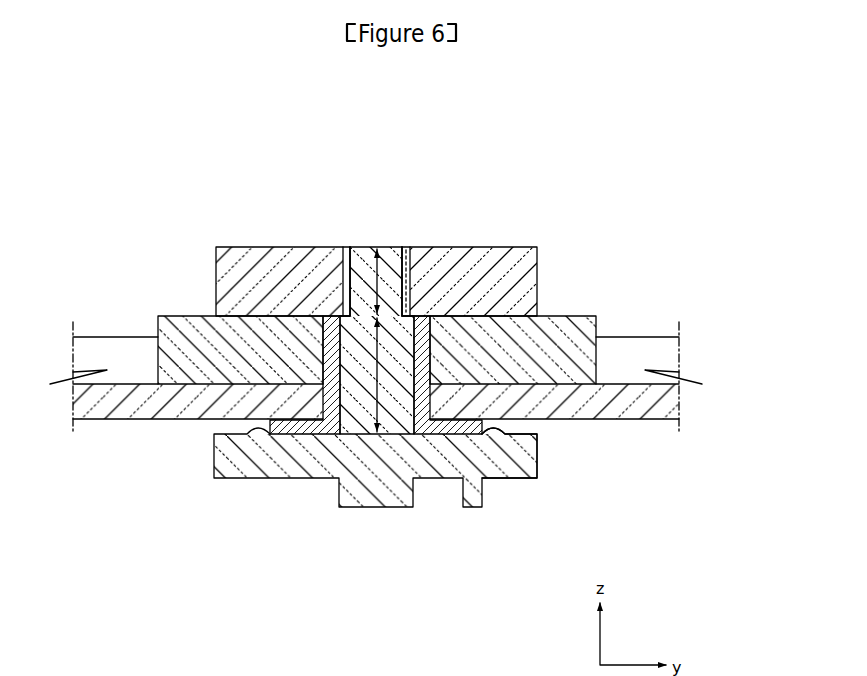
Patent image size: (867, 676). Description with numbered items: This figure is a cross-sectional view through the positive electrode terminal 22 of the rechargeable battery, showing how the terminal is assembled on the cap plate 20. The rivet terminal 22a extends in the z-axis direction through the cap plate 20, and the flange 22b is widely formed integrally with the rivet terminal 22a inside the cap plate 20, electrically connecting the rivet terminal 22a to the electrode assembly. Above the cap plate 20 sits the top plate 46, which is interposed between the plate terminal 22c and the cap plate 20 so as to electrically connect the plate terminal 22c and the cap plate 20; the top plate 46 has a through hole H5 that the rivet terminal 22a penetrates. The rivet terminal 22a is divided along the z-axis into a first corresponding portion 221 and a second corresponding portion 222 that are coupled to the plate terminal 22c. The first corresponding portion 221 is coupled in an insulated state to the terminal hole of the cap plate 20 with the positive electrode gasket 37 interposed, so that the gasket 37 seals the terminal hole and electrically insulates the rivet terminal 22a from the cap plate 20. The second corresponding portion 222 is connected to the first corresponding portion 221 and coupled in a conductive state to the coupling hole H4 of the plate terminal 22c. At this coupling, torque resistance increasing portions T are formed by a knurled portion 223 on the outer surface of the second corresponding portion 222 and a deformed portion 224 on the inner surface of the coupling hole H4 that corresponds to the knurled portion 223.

The cap plate 20 is at (660, 402).
The positive electrode terminal 22 is at (348, 368).
The rivet terminal 22a is at (362, 521).
The flange 22b is at (523, 470).
The plate terminal 22c is at (216, 265).
The first corresponding portion 221 is at (405, 380).
The second corresponding portion 222 is at (363, 255).
The knurled portion 223 is at (412, 300).
The deformed portion 224 is at (432, 360).
The torque resistance increasing portions T is at (540, 163).
The coupling hole H4 is at (367, 247).
The through hole H5 is at (505, 317).
The positive electrode gasket 37 is at (287, 434).
The top plate 46 is at (168, 330).